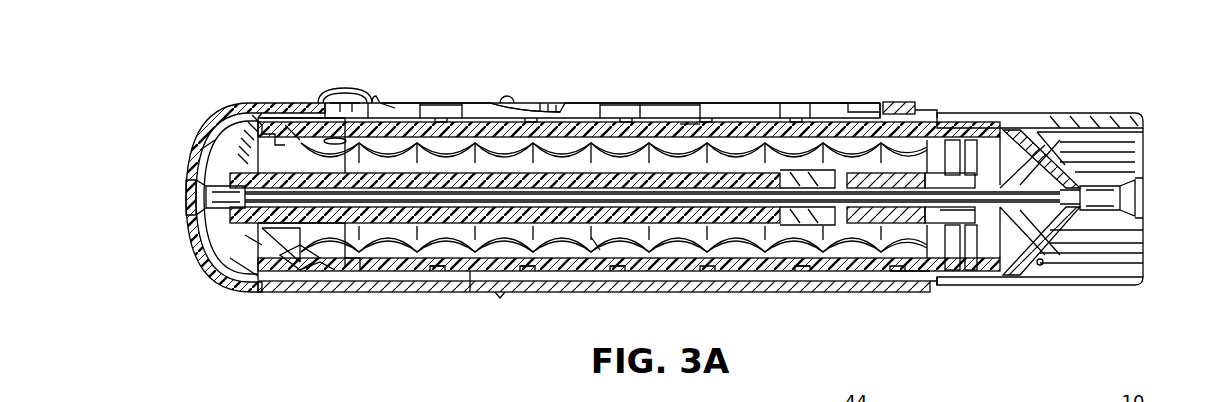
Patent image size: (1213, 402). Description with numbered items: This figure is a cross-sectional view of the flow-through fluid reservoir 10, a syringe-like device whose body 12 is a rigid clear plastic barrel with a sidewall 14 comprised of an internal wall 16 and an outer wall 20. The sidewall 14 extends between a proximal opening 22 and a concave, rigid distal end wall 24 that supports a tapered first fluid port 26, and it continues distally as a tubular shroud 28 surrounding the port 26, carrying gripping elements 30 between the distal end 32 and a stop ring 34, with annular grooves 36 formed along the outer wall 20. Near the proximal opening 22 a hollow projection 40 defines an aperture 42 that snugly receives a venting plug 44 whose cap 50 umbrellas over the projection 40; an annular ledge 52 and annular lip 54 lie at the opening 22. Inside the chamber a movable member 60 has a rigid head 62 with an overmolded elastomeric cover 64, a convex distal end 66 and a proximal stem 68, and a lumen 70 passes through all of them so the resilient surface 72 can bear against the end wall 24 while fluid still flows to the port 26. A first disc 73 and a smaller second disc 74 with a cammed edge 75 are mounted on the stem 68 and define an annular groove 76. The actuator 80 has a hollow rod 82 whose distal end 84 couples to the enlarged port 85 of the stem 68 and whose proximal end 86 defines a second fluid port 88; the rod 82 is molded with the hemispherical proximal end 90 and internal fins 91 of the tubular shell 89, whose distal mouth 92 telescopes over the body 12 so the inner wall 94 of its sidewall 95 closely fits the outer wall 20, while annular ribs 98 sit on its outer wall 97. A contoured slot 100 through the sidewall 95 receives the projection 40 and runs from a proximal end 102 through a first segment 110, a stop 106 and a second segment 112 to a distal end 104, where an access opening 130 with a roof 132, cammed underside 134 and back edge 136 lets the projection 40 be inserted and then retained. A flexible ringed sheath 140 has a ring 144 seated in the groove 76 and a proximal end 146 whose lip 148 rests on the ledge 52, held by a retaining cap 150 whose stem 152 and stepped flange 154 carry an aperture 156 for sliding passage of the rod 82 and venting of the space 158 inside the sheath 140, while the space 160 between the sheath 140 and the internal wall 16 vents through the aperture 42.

The flow-through fluid reservoir 10 is at (1170, 76).
The body 12 is at (737, 122).
The sidewall 14 is at (735, 258).
The internal wall 16 is at (696, 137).
The outer wall 20 is at (770, 292).
The proximal opening 22 is at (255, 106).
The distal end wall 24 is at (1045, 238).
The first fluid port 26 is at (1080, 212).
The shroud 28 is at (1090, 118).
The gripping elements 30 is at (1085, 113).
The distal end 32 is at (1143, 248).
The stop ring 34 is at (950, 287).
The annular grooves 36 is at (706, 254).
The projection 40 is at (352, 88).
The aperture 42 is at (333, 138).
The venting plug 44 is at (374, 96).
The cap 50 is at (340, 88).
The annular ledge 52 is at (292, 282).
The annular lip 54 is at (245, 283).
The movable member 60 is at (1012, 128).
The head 62 is at (1020, 278).
The cover 64 is at (1060, 130).
The distal end 66 is at (1075, 165).
The proximal stem 68 is at (845, 285).
The lumen 70 is at (880, 262).
The resilient surface 72 is at (1040, 276).
The first disc 73 is at (960, 142).
The second disc 74 is at (967, 272).
The cammed edge 75 is at (940, 268).
The annular groove 76 is at (950, 215).
The actuator 80 is at (420, 294).
The hollow rod 82 is at (672, 272).
The distal end 84 is at (812, 172).
The enlarged port 85 is at (810, 262).
The proximal end 86 is at (215, 152).
The second fluid port 88 is at (225, 196).
The shell 89 is at (268, 294).
The proximal end 90 is at (200, 222).
The internal fins 91 is at (208, 150).
The distal mouth 92 is at (905, 292).
The inner wall 94 is at (598, 248).
The sidewall 95 is at (630, 264).
The outer wall 97 is at (474, 294).
The annular ribs 98 is at (500, 294).
The slot 100 is at (583, 101).
The proximal end 102 is at (380, 108).
The distal end 104 is at (850, 105).
The stop 106 is at (535, 108).
The first segment 110 is at (443, 108).
The second segment 112 is at (640, 108).
The access opening 130 is at (945, 118).
The roof 132 is at (895, 102).
The cammed underside 134 is at (922, 110).
The back edge 136 is at (878, 105).
The ringed sheath 140 is at (558, 268).
The ring 144 is at (960, 172).
The proximal end 146 is at (312, 282).
The lip 148 is at (280, 120).
The retaining cap 150 is at (258, 244).
The stem 152 is at (232, 132).
The stepped flange 154 is at (245, 122).
The aperture 156 is at (357, 274).
The space 158 is at (568, 248).
The space 160 is at (455, 272).